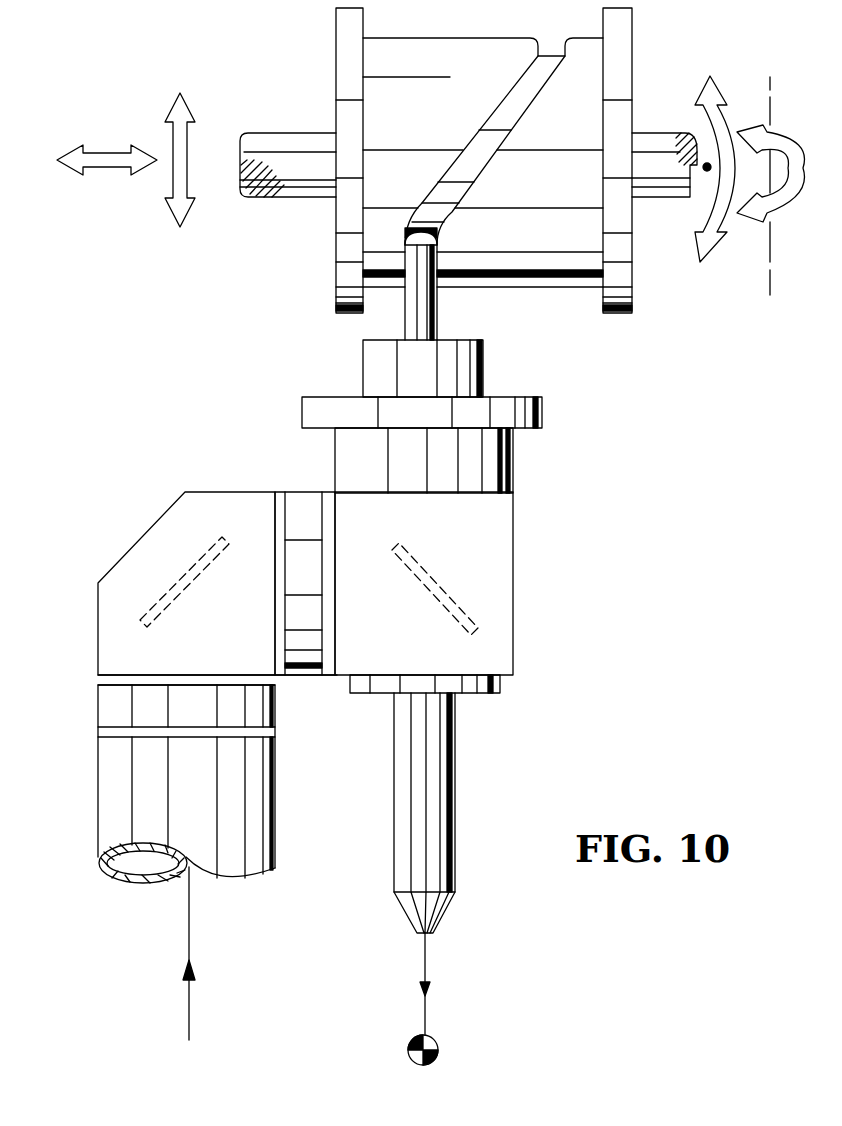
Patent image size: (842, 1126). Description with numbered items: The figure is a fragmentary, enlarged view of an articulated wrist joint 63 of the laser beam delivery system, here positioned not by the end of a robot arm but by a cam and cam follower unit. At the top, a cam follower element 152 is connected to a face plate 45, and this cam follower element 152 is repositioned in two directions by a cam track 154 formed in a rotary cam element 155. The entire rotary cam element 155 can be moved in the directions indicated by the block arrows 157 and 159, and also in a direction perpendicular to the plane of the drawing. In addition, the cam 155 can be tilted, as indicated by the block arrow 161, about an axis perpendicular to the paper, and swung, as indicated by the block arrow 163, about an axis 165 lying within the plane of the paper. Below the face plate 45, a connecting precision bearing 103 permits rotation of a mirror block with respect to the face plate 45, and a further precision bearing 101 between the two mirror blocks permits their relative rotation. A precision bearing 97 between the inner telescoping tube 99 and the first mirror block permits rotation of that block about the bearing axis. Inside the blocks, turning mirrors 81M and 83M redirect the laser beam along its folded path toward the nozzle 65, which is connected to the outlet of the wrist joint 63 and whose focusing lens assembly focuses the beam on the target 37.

The rotary cam element 155 is at (453, 38).
The cam track 154 is at (496, 166).
The cam follower element 152 is at (440, 302).
The block arrow 157 is at (190, 140).
The block arrow 159 is at (120, 117).
The block arrow 161 is at (718, 73).
The block arrow 163 is at (755, 128).
The axis 165 is at (768, 257).
The face plate 45 is at (542, 415).
The connecting precision bearing 103 is at (513, 460).
The precision bearing 101 is at (302, 492).
The wrist joint 63 is at (153, 445).
The turning mirror 81M is at (170, 582).
The turning mirror 83M is at (465, 607).
The precision bearing 97 is at (98, 700).
The inner telescoping tube 99 is at (98, 773).
The nozzle 65 is at (455, 790).
The target 37 is at (438, 1045).